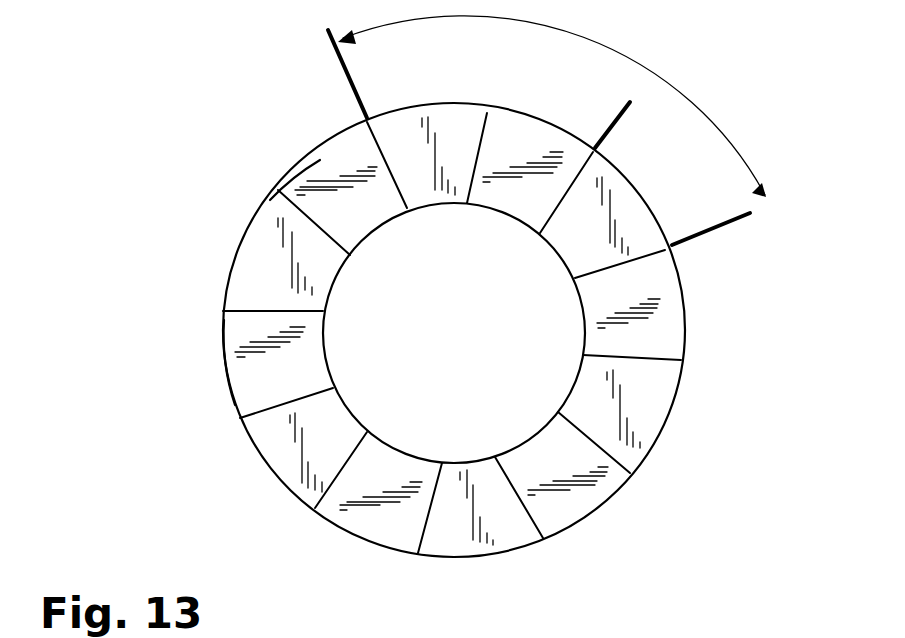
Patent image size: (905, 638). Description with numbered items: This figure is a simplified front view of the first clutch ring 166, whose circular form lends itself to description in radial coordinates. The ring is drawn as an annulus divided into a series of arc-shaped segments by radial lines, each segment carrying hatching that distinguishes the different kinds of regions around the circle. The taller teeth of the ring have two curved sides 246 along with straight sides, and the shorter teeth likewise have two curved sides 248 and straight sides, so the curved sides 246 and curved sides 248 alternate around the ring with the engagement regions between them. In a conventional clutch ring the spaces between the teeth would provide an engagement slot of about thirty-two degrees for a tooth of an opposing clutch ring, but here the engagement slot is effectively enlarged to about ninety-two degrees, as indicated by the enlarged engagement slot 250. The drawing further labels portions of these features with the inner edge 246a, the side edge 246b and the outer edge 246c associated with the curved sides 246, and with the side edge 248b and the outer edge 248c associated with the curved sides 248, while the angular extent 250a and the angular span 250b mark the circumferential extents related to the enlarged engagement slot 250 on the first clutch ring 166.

The first clutch ring 166 is at (682, 412).
The curved sides of taller teeth 246 is at (328, 165).
The inner edge of segment 246a is at (380, 225).
The side edge of first segment 246b is at (297, 207).
The outer edge of first segment 246c is at (289, 172).
The curved sides of shorter teeth 248 is at (515, 148).
The side edge of second segment 248b is at (263, 311).
The outer edge of second segment 248c is at (227, 385).
The enlarged engagement slot 250 is at (263, 255).
The angular extent of segment 250a is at (705, 220).
The angular span of segment group 250b is at (552, 106).